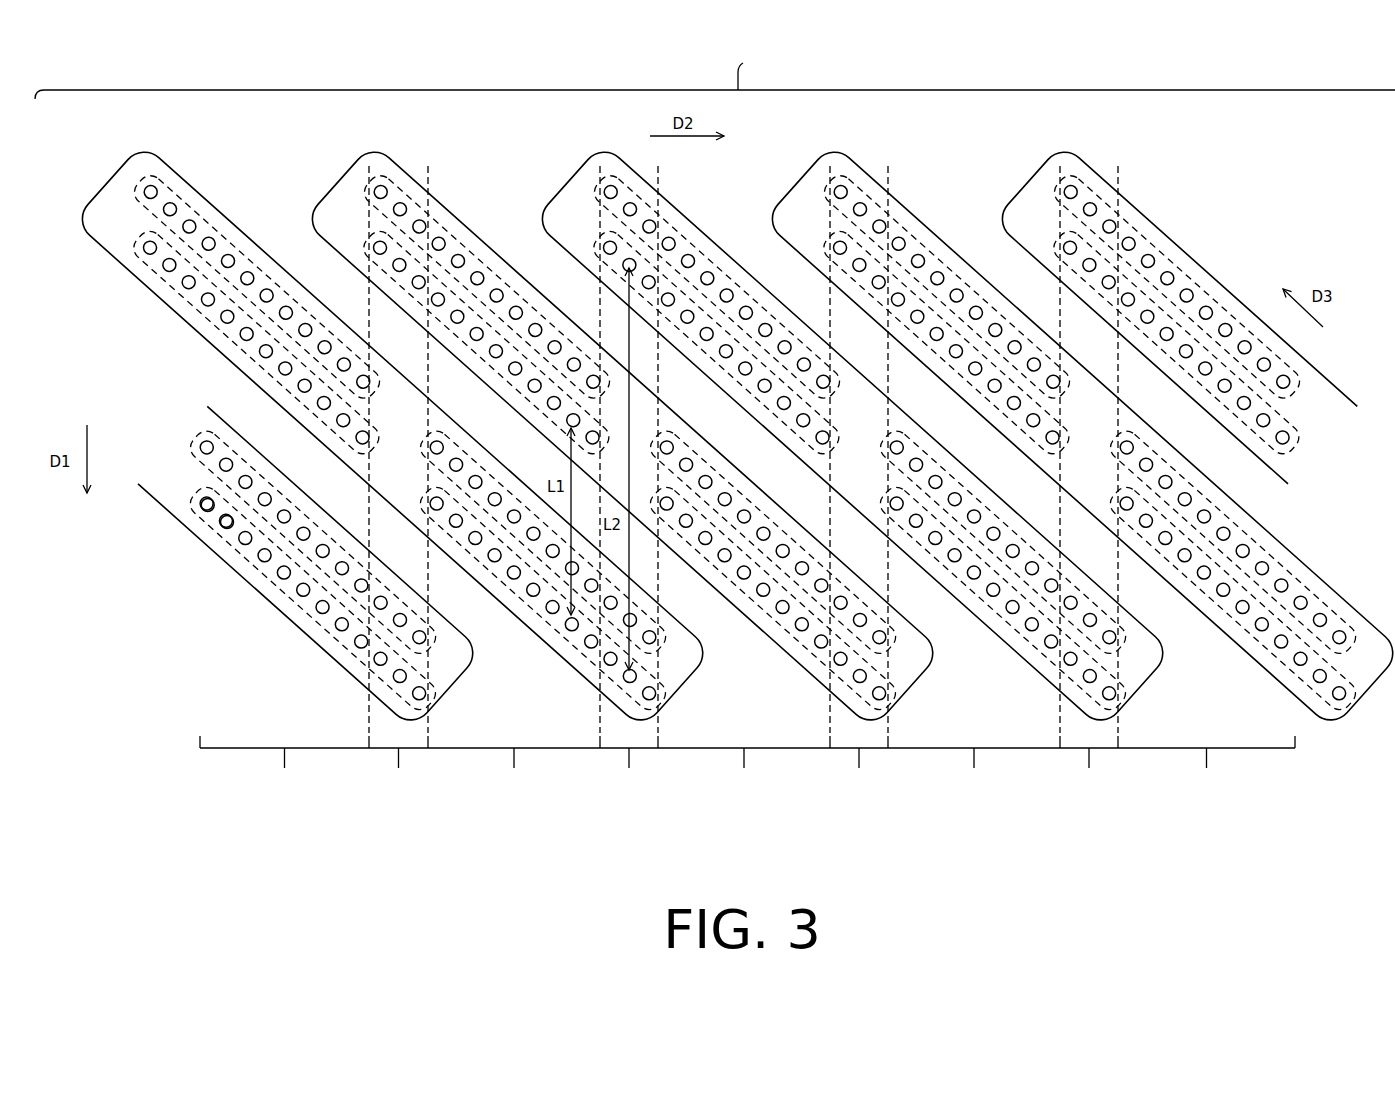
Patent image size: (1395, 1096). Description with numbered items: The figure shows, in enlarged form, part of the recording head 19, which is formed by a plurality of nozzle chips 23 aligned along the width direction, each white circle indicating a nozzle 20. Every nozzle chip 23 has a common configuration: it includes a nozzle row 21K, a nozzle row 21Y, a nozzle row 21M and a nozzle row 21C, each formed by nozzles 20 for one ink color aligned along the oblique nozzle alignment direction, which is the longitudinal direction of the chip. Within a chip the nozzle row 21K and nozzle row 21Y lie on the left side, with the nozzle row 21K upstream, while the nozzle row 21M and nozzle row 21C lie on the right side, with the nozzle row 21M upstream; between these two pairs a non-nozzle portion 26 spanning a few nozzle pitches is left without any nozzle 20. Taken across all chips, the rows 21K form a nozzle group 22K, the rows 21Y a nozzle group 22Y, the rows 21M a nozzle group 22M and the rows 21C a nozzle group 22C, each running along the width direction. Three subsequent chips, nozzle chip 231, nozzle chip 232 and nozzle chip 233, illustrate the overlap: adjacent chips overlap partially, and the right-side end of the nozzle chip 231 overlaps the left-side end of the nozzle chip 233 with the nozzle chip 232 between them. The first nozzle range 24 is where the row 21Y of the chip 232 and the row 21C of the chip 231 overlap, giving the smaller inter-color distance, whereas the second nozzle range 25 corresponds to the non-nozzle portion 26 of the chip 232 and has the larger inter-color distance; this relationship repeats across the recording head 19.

The recording head 19 is at (715, 63).
The nozzle 20 is at (204, 505).
The nozzle row 21K is at (202, 203).
The nozzle row 21Y is at (203, 345).
The nozzle row 21M is at (238, 452).
The nozzle row 21C is at (277, 615).
The nozzle group 22K is at (1215, 197).
The nozzle group 22Y is at (150, 392).
The nozzle group 22M is at (1295, 490).
The nozzle group 22C is at (267, 667).
The nozzle chip 23 is at (811, 188).
The nozzle chip 231 is at (113, 188).
The nozzle chip 232 is at (343, 188).
The nozzle chip 233 is at (573, 188).
The first nozzle range 24 is at (747, 768).
The second nozzle range 25 is at (743, 483).
The non-nozzle portion 26 is at (400, 408).